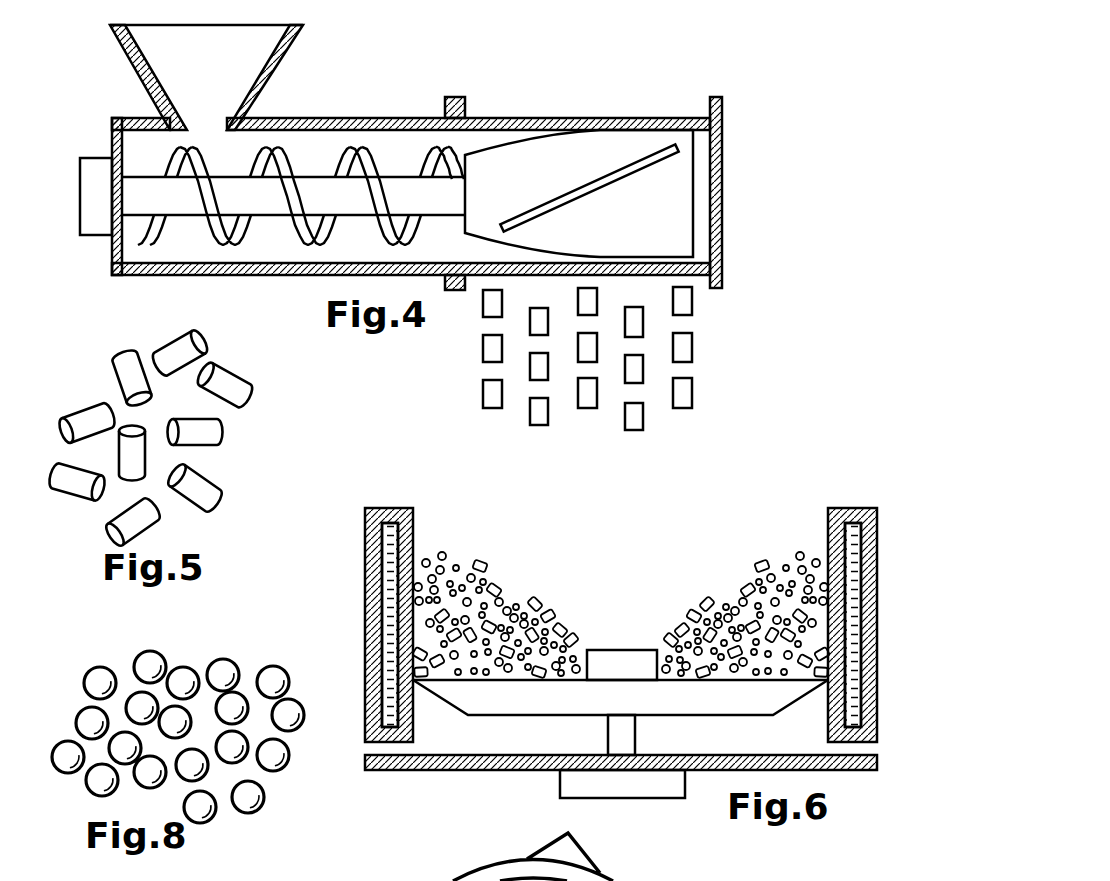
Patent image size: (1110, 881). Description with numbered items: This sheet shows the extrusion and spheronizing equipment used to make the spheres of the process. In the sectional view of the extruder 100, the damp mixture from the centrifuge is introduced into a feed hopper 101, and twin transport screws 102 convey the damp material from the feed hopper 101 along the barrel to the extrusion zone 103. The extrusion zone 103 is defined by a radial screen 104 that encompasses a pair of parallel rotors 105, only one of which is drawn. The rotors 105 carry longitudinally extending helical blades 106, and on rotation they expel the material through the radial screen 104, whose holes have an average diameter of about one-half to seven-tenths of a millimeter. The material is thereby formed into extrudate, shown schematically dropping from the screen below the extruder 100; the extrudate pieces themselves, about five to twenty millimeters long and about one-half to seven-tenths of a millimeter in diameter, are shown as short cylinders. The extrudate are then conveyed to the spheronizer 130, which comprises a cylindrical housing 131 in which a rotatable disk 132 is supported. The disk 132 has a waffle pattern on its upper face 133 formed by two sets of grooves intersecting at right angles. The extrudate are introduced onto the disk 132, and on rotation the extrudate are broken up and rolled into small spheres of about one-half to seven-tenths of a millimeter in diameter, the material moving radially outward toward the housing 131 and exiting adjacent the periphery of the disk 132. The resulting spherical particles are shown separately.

In FIG. 4, the extruder 100 is at (370, 88).
In FIG. 4, the feed hopper 101 is at (140, 75).
In FIG. 4, the twin transport screws 102 is at (430, 195).
In FIG. 4, the extrusion zone 103 is at (615, 97).
In FIG. 4, the radial screen 104 is at (660, 272).
In FIG. 4, the rotors 105 is at (645, 225).
In FIG. 4, the helical blades 106 is at (643, 168).
In FIG. 6, the spheronizer 130 is at (840, 474).
In FIG. 6, the cylindrical housing 131 is at (877, 570).
In FIG. 6, the rotatable disk 132 is at (775, 698).
In FIG. 6, the upper face 133 is at (565, 657).